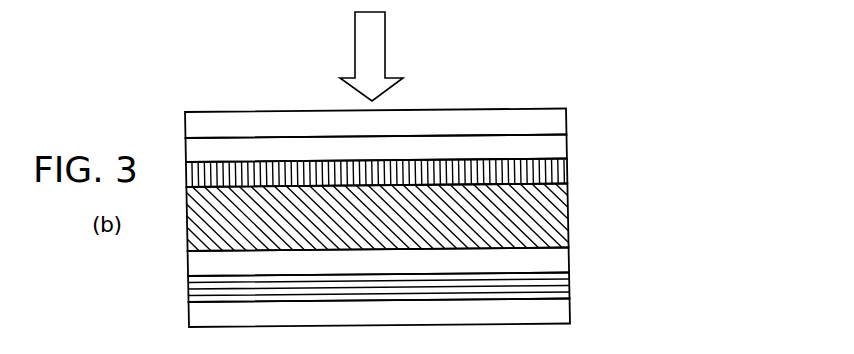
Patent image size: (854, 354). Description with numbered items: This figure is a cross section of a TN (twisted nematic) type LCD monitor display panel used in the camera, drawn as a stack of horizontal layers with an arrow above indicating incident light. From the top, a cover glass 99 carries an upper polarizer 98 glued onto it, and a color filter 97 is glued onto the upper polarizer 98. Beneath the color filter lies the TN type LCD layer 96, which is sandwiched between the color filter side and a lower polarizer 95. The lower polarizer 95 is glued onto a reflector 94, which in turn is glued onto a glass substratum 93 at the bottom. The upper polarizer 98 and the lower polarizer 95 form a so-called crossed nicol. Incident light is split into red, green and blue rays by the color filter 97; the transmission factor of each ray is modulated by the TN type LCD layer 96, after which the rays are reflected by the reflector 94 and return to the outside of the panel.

The cover glass 99 is at (568, 121).
The upper polarizer 98 is at (568, 145).
The color filter 97 is at (568, 170).
The TN type LCD layer 96 is at (568, 208).
The lower polarizer 95 is at (568, 260).
The reflector 94 is at (568, 284).
The glass substratum 93 is at (568, 310).